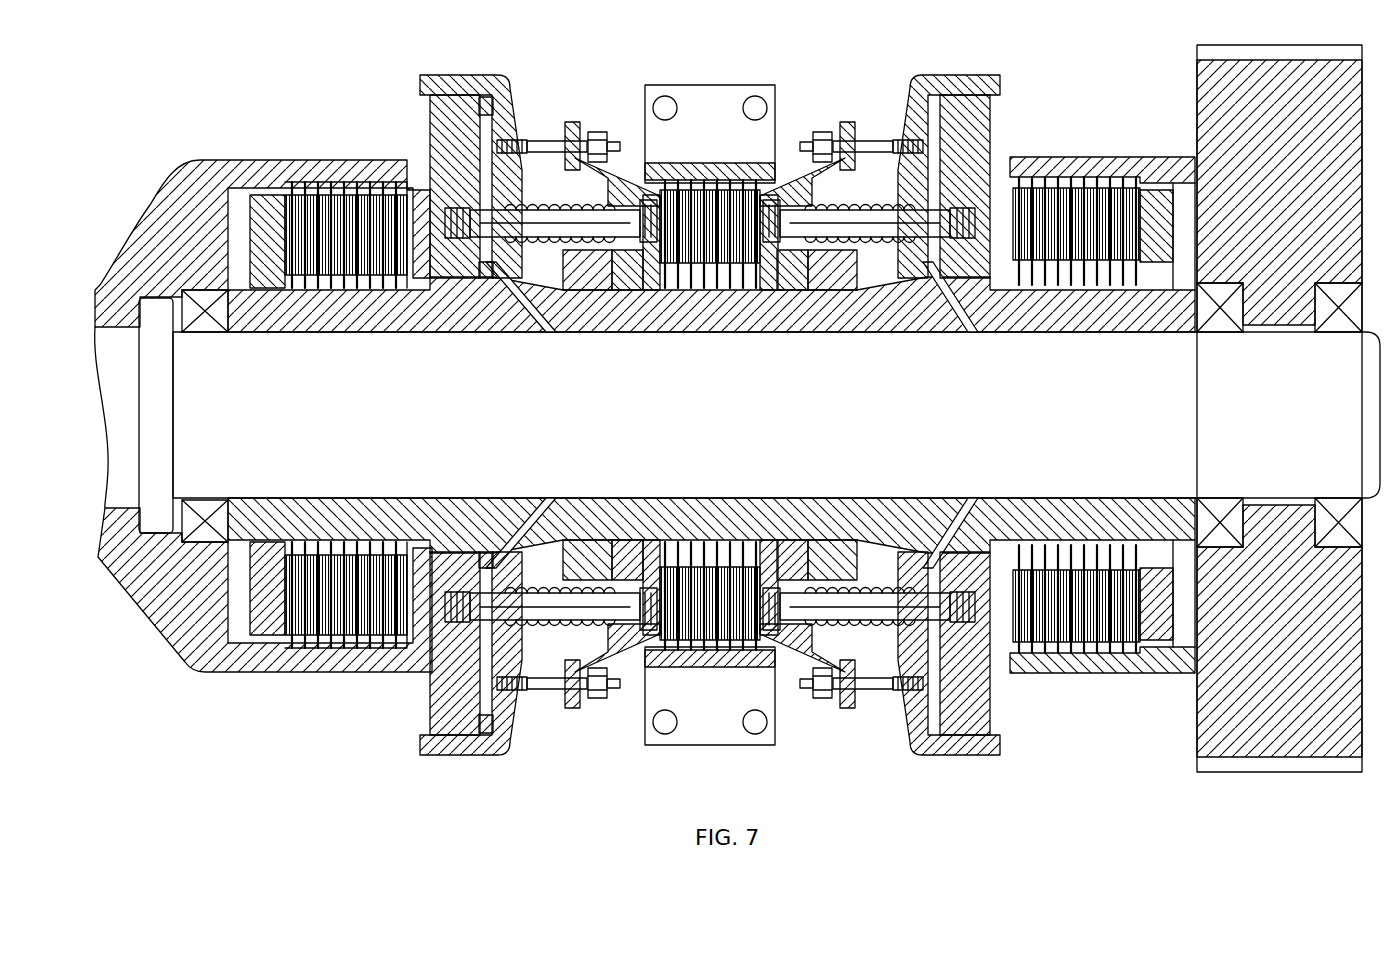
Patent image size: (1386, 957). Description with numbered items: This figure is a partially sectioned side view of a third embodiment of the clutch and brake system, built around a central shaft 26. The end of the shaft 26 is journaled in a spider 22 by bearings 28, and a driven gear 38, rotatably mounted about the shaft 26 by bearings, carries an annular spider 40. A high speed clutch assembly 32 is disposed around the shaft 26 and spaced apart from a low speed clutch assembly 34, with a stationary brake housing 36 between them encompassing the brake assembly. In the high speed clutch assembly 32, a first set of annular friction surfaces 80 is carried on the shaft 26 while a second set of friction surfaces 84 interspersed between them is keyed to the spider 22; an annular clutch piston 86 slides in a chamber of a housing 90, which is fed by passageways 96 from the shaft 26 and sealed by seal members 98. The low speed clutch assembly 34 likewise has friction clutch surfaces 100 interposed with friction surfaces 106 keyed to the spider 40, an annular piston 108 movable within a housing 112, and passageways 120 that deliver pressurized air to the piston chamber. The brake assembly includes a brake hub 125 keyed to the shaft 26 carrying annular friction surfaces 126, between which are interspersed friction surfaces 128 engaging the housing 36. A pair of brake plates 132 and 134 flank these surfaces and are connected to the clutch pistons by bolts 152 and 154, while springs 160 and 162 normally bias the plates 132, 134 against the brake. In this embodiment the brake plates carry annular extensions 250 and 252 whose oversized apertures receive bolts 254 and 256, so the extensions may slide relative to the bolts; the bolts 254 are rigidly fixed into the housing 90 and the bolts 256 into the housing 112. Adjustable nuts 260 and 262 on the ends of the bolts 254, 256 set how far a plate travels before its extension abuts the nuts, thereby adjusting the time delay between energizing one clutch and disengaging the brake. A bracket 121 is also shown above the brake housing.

The spider 22 is at (182, 200).
The shaft 26 is at (728, 422).
The bearings 28 is at (200, 308).
The high speed clutch assembly 32 is at (330, 120).
The low speed clutch assembly 34 is at (1080, 130).
The stationary brake housing 36 is at (712, 163).
The driven gear 38 is at (1296, 194).
The annular spider 40 is at (1122, 157).
The first set of annular friction surfaces 80 is at (303, 290).
The second set of annular friction surfaces 84 is at (305, 183).
The annular clutch piston 86 is at (440, 140).
The housing 90 is at (510, 95).
The passageways 96 is at (512, 305).
The seal members 98 is at (466, 97).
The friction clutch surfaces 100 is at (1060, 285).
The second set of annular friction surfaces 106 is at (1035, 185).
The annular piston 108 is at (972, 150).
The housing 112 is at (927, 75).
The passageways 120 is at (937, 305).
The bracket 121 is at (748, 98).
The brake hub 125 is at (762, 322).
The annular friction surfaces 126 is at (680, 290).
The second set of annular friction surfaces 128 is at (762, 172).
The brake plate 132 is at (614, 270).
The brake plate 134 is at (800, 270).
The bolts 152 is at (580, 234).
The bolts 154 is at (882, 234).
The springs 160 is at (548, 204).
The springs 162 is at (878, 204).
The annular extension 250 is at (575, 122).
The annular extension 252 is at (847, 122).
The bolts 254 is at (545, 140).
The bolts 256 is at (866, 140).
The adjustable nuts 260 is at (600, 132).
The adjustable nuts 262 is at (822, 132).